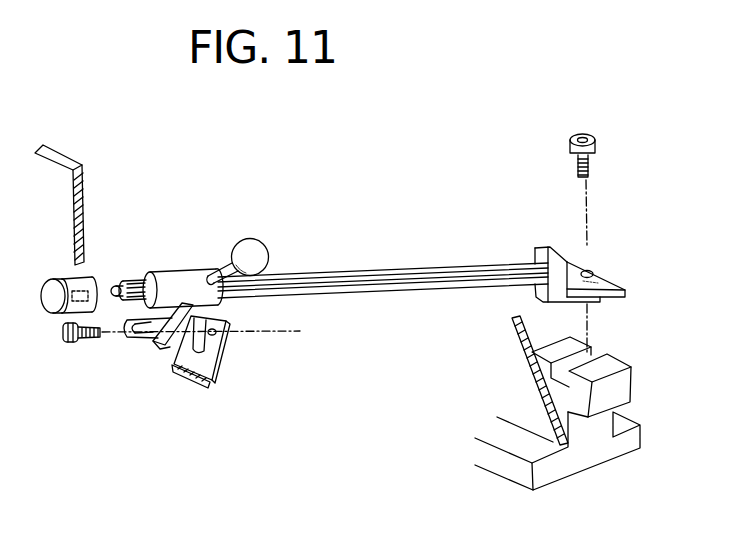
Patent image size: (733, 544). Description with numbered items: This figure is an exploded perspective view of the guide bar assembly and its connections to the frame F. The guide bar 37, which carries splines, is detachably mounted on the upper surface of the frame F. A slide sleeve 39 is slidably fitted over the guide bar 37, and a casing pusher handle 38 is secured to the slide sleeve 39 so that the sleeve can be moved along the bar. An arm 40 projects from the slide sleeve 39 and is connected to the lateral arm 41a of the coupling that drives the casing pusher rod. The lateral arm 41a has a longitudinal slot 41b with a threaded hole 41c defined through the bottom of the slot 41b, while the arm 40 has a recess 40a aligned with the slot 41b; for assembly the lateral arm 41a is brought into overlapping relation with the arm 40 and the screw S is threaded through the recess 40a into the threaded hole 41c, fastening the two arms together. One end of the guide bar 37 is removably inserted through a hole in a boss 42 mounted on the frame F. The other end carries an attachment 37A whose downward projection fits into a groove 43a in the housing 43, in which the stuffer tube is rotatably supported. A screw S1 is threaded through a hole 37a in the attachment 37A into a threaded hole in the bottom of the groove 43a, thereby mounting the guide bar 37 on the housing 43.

The frame F is at (77, 166).
The boss 42 is at (89, 276).
The screw S is at (78, 344).
The slide sleeve 39 is at (181, 268).
The casing pusher handle 38 is at (264, 250).
The guide bar 37 is at (363, 294).
The attachment 37A is at (546, 248).
The hole 37a is at (591, 270).
The screw S1 is at (568, 143).
The housing 43 is at (527, 371).
The groove 43a is at (598, 353).
The arm 40 is at (129, 339).
The recess 40a is at (152, 346).
The lateral arm 41a is at (222, 384).
The longitudinal slot 41b is at (220, 353).
The threaded hole 41c is at (224, 328).